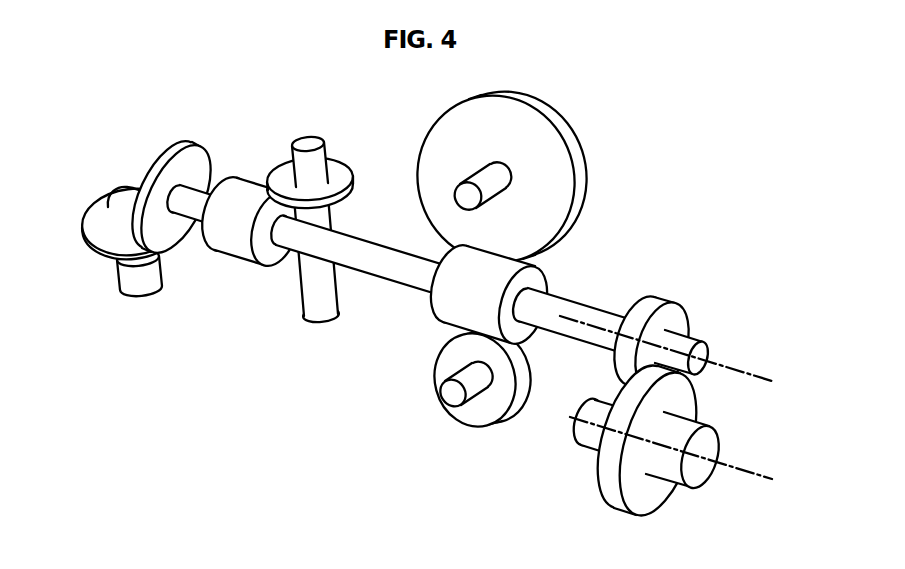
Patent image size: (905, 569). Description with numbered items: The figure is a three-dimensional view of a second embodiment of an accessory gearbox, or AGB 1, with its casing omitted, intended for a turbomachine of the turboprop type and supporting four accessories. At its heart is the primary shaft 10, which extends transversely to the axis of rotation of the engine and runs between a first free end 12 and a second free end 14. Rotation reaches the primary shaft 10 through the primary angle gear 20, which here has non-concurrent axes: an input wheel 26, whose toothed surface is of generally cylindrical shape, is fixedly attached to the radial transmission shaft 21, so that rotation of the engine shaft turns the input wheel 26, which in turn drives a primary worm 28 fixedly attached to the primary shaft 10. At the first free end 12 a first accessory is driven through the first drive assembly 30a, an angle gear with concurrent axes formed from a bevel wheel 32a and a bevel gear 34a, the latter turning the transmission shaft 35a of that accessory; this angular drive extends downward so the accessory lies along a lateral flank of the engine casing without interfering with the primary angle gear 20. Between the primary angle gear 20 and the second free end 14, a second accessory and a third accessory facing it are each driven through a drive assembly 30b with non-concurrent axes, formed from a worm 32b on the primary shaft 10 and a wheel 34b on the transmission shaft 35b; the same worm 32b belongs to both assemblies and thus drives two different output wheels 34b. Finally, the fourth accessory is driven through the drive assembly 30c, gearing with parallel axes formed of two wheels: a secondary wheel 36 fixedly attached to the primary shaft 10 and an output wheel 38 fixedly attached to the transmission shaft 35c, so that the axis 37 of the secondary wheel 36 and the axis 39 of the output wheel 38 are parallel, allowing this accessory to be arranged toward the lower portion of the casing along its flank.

The accessory gearbox (AGB) 1 is at (409, 312).
The primary shaft 10 is at (383, 262).
The first free end 12 is at (184, 207).
The second free end 14 is at (687, 338).
The primary angle gear 20 is at (316, 233).
The radial transmission shaft 21 is at (328, 293).
The input wheel 26 is at (287, 176).
The primary worm 28 is at (223, 241).
The first drive assembly 30a is at (107, 216).
The second drive assembly 30b is at (500, 273).
The drive assembly with parallel axes 30c is at (629, 455).
The bevel wheel 32a is at (202, 167).
The worm 32b is at (453, 310).
The bevel gear 34a is at (100, 214).
The wheel 34b is at (447, 143).
The transmission shaft 35a is at (128, 276).
The transmission shaft 35b is at (492, 181).
The transmission shaft 35c is at (698, 470).
The secondary wheel 36 is at (657, 306).
The axis of the secondary wheel 37 is at (762, 365).
The output wheel 38 is at (643, 495).
The axis of the output wheel 39 is at (762, 462).